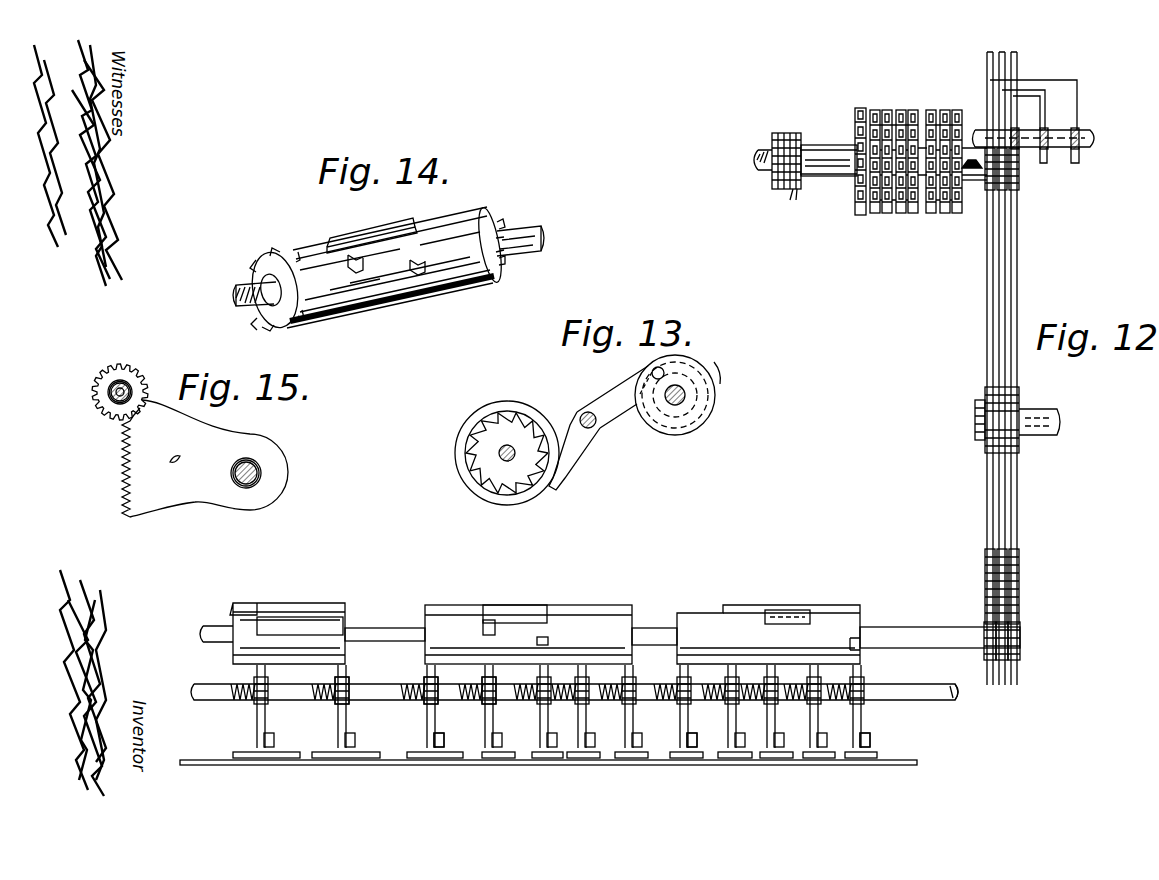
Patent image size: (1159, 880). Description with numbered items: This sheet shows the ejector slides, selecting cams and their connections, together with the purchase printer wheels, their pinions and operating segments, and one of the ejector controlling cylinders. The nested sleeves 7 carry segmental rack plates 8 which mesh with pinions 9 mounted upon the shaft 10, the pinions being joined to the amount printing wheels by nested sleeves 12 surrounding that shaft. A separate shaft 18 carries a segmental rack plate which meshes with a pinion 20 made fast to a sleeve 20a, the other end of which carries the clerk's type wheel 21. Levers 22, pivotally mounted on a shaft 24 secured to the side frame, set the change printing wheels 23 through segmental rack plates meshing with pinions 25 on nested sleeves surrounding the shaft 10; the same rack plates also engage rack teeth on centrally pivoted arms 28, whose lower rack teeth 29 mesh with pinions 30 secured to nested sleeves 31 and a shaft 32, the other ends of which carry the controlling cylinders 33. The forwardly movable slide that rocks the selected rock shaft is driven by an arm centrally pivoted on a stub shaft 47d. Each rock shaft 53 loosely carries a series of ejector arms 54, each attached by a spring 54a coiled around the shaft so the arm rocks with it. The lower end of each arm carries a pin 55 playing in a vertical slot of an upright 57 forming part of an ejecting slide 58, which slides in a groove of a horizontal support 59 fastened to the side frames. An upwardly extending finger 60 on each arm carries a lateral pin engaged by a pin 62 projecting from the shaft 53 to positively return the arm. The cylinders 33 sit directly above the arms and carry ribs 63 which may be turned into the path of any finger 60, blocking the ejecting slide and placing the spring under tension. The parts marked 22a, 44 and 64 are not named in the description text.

In FIG. 15, the nested sleeves 7 is at (258, 480).
In FIG. 15, the segmental rack plate 8 is at (205, 458).
In FIG. 15, the pinion 9 is at (118, 368).
In FIG. 12, the pinion 9 is at (782, 190).
In FIG. 15, the shaft 10 is at (108, 391).
In FIG. 13, the shaft 10 is at (507, 445).
In FIG. 12, the shaft 10 is at (758, 166).
In FIG. 15, the nested sleeves 12 is at (110, 403).
In FIG. 15, the shaft 18 is at (262, 468).
In FIG. 12, the pinion 20 is at (797, 190).
In FIG. 12, the sleeve 20a is at (825, 148).
In FIG. 12, the clerk's type wheel 21 is at (858, 214).
In FIG. 12, the lever 22 is at (1044, 120).
In FIG. 12, the bracket 22a is at (1005, 62).
In FIG. 12, the change printing wheel 23 is at (945, 214).
In FIG. 12, the shaft 24 is at (1083, 150).
In FIG. 12, the pinion 25 is at (1003, 190).
In FIG. 12, the centrally pivoted arm 28 is at (1000, 295).
In FIG. 12, the rack teeth 29 is at (1000, 576).
In FIG. 12, the pinion 30 is at (1015, 626).
In FIG. 14, the nested sleeves 31 is at (527, 228).
In FIG. 12, the nested sleeves 31 is at (648, 630).
In FIG. 14, the shaft 32 is at (236, 294).
In FIG. 12, the shaft 32 is at (371, 628).
In FIG. 14, the controlling cylinder 33 is at (385, 290).
In FIG. 12, the controlling cylinder 33 is at (245, 625).
In FIG. 12, the number wheels 44 is at (912, 110).
In FIG. 12, the stub shaft 47d is at (1026, 436).
In FIG. 12, the rock shaft 53 is at (940, 702).
In FIG. 12, the ejector arm 54 is at (266, 715).
In FIG. 12, the spring 54a is at (426, 703).
In FIG. 12, the pin 55 is at (690, 745).
In FIG. 12, the upright 57 is at (440, 748).
In FIG. 12, the ejecting slide 58 is at (325, 759).
In FIG. 12, the horizontal support 59 is at (395, 766).
In FIG. 12, the finger 60 is at (622, 690).
In FIG. 12, the pin 62 is at (423, 673).
In FIG. 14, the rib 63 is at (360, 233).
In FIG. 12, the rib 63 is at (542, 612).
In FIG. 12, the collar 64 is at (334, 678).